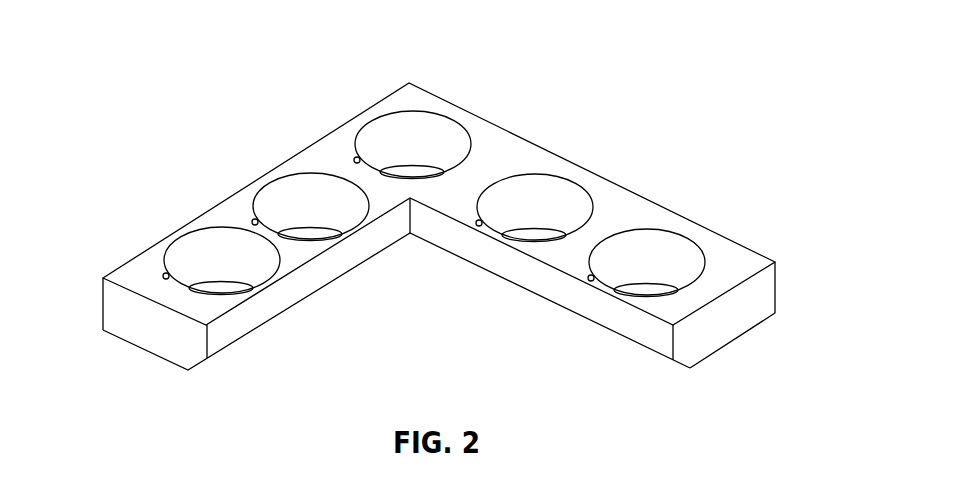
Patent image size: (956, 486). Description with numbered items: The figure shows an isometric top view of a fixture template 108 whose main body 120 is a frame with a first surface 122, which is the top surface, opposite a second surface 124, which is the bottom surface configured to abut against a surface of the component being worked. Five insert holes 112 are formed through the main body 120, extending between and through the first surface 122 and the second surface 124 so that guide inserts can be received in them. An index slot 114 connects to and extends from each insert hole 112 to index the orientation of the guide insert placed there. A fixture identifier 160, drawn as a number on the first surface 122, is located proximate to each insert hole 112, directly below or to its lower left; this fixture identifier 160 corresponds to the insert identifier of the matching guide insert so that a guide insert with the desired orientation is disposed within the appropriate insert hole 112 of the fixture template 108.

The fixture template 108 is at (712, 197).
The insert holes 112 is at (392, 135).
The index slots 114 is at (255, 221).
The main body 120 is at (776, 287).
The first surface 122 is at (738, 260).
The second surface 124 is at (712, 357).
The fixture identifier 160 is at (212, 311).